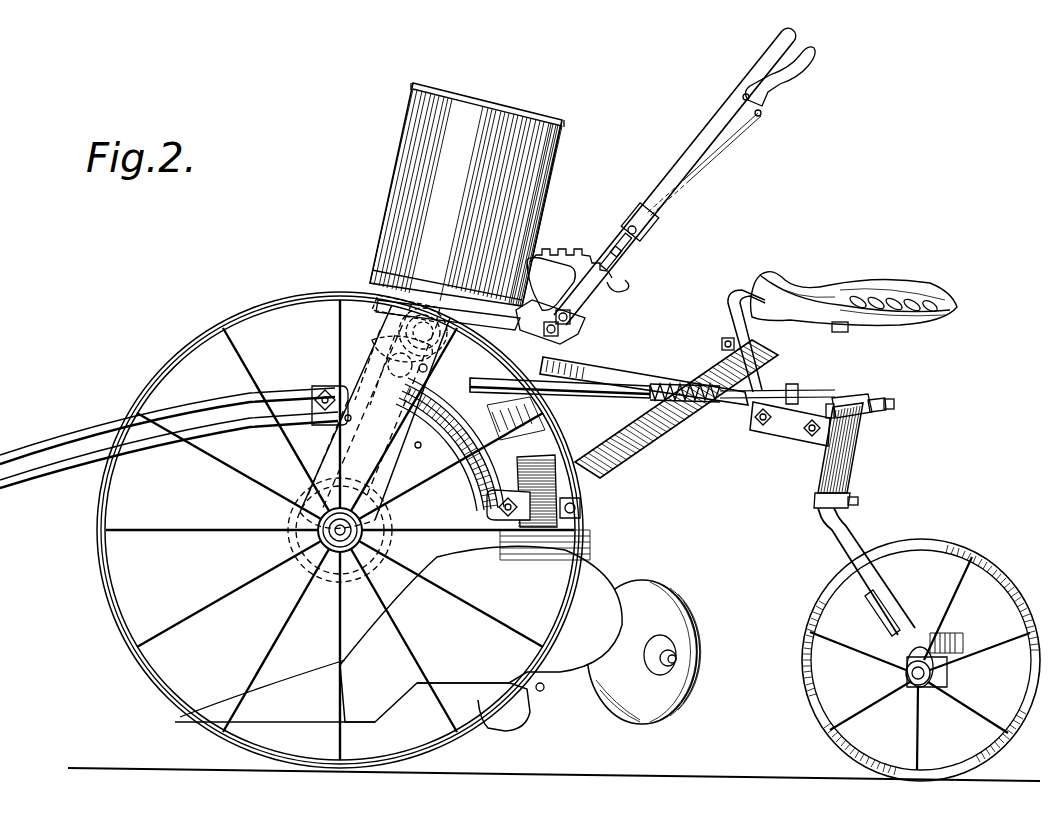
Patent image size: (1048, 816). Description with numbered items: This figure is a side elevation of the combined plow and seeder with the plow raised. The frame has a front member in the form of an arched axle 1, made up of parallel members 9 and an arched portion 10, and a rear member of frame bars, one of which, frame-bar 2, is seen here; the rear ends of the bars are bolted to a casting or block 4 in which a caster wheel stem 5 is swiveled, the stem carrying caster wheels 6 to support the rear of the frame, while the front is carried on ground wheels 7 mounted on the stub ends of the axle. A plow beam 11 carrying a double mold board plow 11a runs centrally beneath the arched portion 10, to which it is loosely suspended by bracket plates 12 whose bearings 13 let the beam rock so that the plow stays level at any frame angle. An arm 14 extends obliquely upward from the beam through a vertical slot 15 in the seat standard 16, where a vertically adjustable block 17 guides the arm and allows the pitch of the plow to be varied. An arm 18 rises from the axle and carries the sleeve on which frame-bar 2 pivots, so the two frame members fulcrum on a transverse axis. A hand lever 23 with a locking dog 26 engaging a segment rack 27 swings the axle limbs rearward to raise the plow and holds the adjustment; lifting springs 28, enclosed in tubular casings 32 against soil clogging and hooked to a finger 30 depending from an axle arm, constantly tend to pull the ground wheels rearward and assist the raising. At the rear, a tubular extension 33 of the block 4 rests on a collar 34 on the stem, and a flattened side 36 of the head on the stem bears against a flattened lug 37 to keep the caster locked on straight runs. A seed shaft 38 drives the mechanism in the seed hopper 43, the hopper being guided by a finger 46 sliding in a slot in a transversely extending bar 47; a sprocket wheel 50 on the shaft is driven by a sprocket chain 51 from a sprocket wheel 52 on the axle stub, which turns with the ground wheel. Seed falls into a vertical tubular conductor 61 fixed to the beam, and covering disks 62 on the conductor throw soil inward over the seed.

The arched axle 1 is at (305, 572).
The frame-bar 2 is at (604, 368).
The casting or block 4 is at (796, 438).
The caster wheel stem 5 is at (848, 538).
The caster wheels 6 is at (918, 542).
The ground wheels 7 is at (215, 334).
The parallel members 9 is at (330, 446).
The arched portion 10 is at (390, 358).
The plow beam 11 is at (178, 443).
The double mold board plow 11a is at (481, 672).
The bracket plates 12 is at (326, 386).
The bearings 13 is at (395, 338).
The arm 14 is at (654, 438).
The vertical slot 15 is at (762, 392).
The seat standard 16 is at (735, 313).
The vertically adjustable block 17 is at (722, 346).
The arm 18 is at (418, 362).
The hand lever 23 is at (692, 137).
The locking dog 26 is at (612, 244).
The segment rack 27 is at (566, 256).
The lifting springs 28 is at (682, 384).
The finger 30 is at (450, 444).
The tubular casings 32 is at (582, 397).
The tubular extension 33 is at (860, 448).
The collar 34 is at (815, 500).
The flattened side 36 is at (842, 394).
The flattened lug 37 is at (829, 400).
The seed shaft 38 is at (444, 300).
The seed hopper 43 is at (467, 190).
The finger 46 is at (570, 325).
The transversely extending bar 47 is at (551, 284).
The sprocket wheel 50 is at (395, 305).
The sprocket chain 51 is at (320, 466).
The sprocket wheel 52 is at (295, 545).
The vertical tubular conductor 61 is at (548, 556).
The covering disks 62 is at (667, 590).